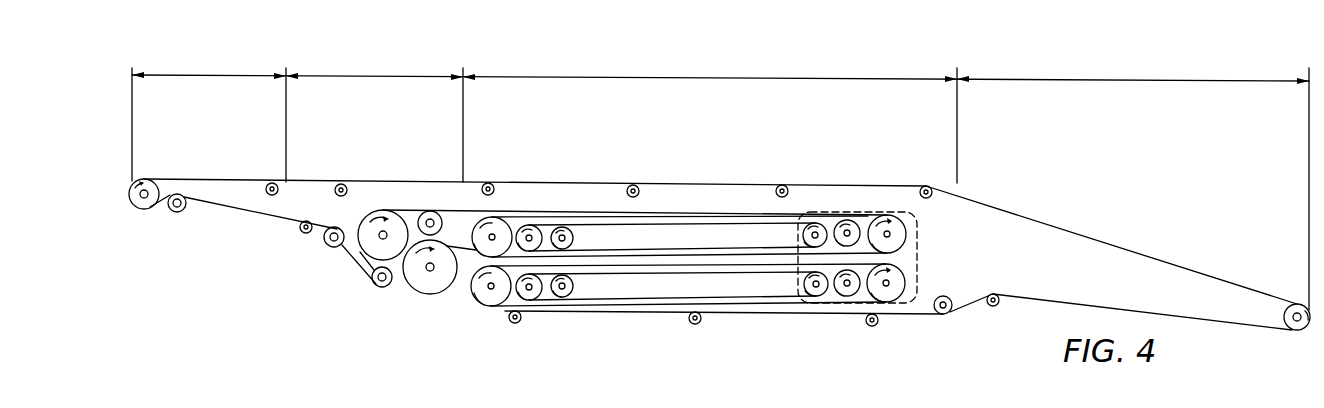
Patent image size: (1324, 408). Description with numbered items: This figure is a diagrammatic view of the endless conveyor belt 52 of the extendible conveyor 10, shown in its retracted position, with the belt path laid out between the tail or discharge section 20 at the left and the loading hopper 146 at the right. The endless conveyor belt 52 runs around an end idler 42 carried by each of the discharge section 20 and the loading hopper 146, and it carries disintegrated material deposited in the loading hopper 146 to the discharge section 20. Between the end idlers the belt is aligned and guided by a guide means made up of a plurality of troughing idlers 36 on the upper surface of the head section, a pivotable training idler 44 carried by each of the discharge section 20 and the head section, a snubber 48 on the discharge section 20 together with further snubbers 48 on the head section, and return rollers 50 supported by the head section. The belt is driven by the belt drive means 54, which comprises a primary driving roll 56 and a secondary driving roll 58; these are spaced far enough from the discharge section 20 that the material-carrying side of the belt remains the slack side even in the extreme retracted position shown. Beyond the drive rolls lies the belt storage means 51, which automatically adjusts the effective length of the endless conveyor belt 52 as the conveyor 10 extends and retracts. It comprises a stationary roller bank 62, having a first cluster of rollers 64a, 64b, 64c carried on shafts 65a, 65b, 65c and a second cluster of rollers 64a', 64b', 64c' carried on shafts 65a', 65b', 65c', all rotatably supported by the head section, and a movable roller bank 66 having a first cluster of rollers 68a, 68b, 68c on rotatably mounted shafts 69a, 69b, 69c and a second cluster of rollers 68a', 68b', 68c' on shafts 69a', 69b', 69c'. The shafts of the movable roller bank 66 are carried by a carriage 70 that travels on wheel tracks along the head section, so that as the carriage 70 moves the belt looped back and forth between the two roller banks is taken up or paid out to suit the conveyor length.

The extendible conveyor 10 is at (1026, 172).
The tail or discharge section 20 is at (159, 75).
The troughing idlers 36 is at (345, 182).
The end idler 42 is at (158, 182).
The pivotable training idler 44 is at (272, 182).
The snubber 48 is at (182, 213).
The return rollers 50 is at (515, 324).
The belt storage means 51 is at (528, 76).
The endless conveyor belt 52 is at (184, 181).
The belt drive means 54 is at (316, 75).
The primary driving roll 56 is at (362, 226).
The secondary driving roll 58 is at (418, 281).
The stationary roller bank 62 is at (537, 173).
The roller 64a is at (495, 204).
The roller 64b is at (552, 201).
The roller 64c is at (602, 201).
The roller 64a' is at (465, 313).
The roller 64b' is at (539, 312).
The roller 64c' is at (576, 335).
The shaft 65a is at (447, 220).
The shaft 65b is at (526, 220).
The shaft 65c is at (579, 219).
The shaft 65a' is at (454, 314).
The shaft 65b' is at (549, 331).
The shaft 65c' is at (592, 349).
The movable roller bank 66 is at (918, 222).
The roller 68a is at (806, 197).
The roller 68b is at (853, 196).
The roller 68c is at (897, 200).
The roller 68a' is at (784, 305).
The roller 68b' is at (836, 314).
The roller 68c' is at (896, 309).
The shaft 69a is at (771, 220).
The shaft 69b is at (853, 220).
The shaft 69c is at (919, 238).
The shaft 69a' is at (768, 333).
The shaft 69b' is at (825, 338).
The shaft 69c' is at (937, 327).
The carriage 70 is at (926, 255).
The loading hopper 146 is at (985, 80).